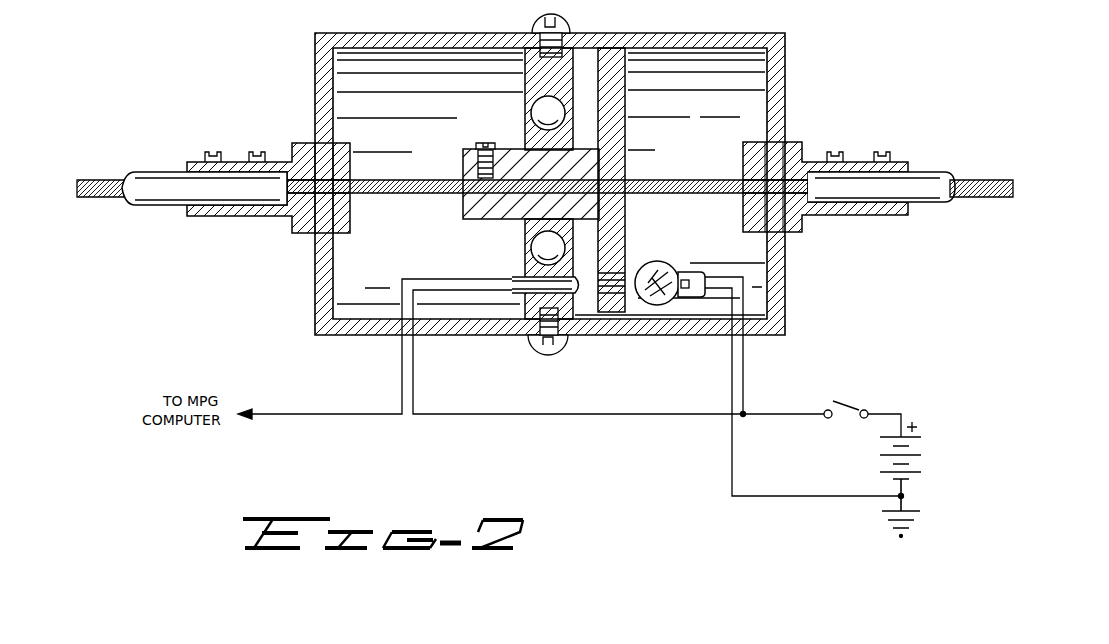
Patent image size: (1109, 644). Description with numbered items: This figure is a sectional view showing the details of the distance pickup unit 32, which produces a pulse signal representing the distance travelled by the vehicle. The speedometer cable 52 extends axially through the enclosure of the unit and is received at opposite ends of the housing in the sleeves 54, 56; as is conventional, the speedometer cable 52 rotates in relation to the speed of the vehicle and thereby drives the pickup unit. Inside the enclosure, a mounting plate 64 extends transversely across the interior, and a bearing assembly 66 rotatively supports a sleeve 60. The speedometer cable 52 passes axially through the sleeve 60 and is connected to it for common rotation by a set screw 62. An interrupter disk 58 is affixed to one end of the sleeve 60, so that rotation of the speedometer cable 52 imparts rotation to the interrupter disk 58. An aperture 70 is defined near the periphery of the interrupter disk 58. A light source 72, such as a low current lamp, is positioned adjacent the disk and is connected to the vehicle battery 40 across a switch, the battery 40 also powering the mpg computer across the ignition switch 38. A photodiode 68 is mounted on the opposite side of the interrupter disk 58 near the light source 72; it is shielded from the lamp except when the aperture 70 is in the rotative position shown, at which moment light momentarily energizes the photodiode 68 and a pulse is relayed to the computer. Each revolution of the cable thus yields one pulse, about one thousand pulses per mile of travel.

The distance pickup unit 32 is at (832, 72).
The ignition switch 38 is at (840, 401).
The vehicle battery 40 is at (917, 473).
The speedometer cable 52 is at (120, 173).
The sleeve 54 is at (292, 162).
The sleeve 56 is at (802, 162).
The interrupter disk 58 is at (618, 103).
The sleeve 60 is at (473, 215).
The set screw 62 is at (482, 143).
The mounting plate 64 is at (533, 68).
The bearing assembly 66 is at (528, 120).
The photodiode 68 is at (516, 277).
The aperture 70 is at (636, 273).
The light source 72 is at (667, 265).